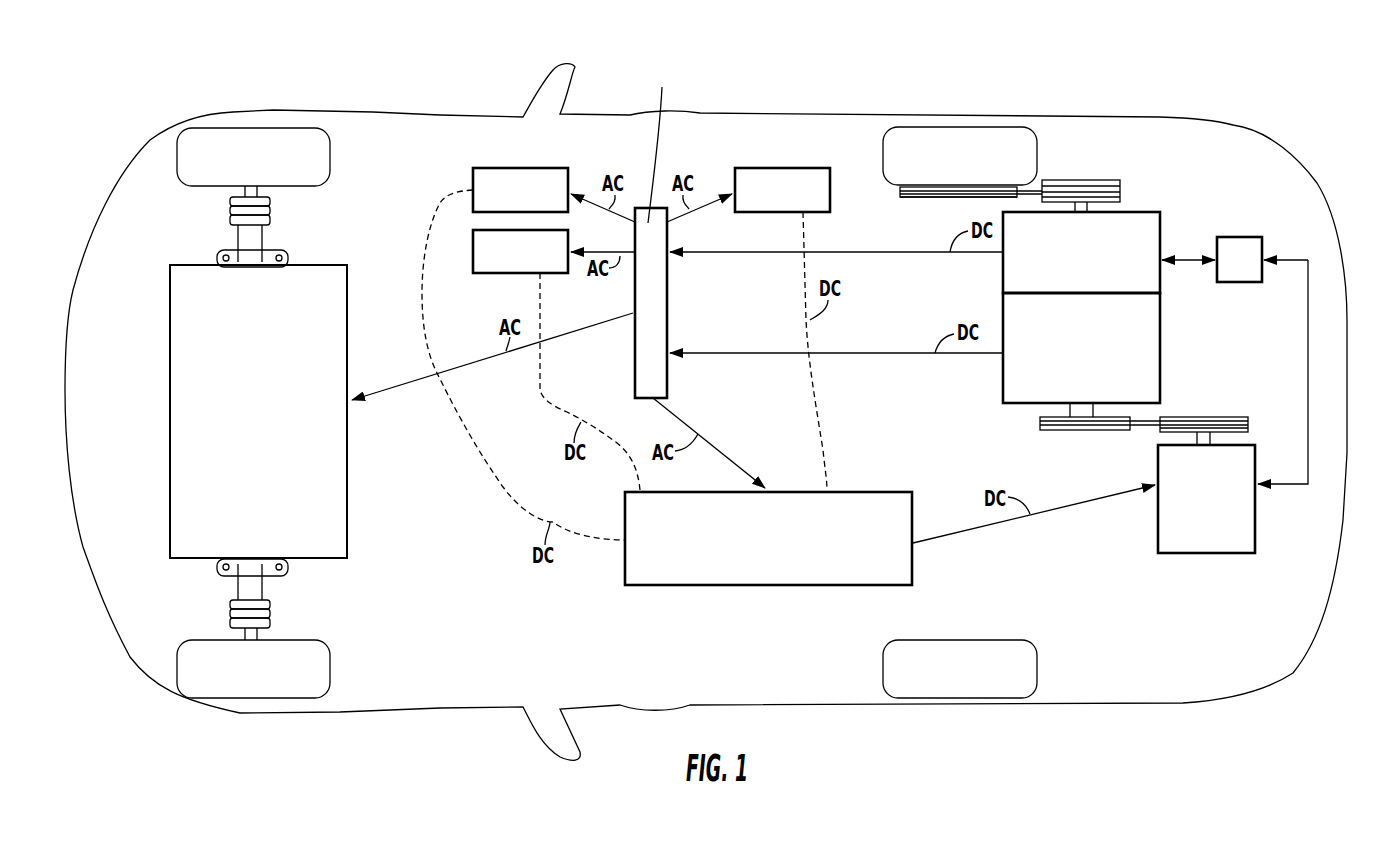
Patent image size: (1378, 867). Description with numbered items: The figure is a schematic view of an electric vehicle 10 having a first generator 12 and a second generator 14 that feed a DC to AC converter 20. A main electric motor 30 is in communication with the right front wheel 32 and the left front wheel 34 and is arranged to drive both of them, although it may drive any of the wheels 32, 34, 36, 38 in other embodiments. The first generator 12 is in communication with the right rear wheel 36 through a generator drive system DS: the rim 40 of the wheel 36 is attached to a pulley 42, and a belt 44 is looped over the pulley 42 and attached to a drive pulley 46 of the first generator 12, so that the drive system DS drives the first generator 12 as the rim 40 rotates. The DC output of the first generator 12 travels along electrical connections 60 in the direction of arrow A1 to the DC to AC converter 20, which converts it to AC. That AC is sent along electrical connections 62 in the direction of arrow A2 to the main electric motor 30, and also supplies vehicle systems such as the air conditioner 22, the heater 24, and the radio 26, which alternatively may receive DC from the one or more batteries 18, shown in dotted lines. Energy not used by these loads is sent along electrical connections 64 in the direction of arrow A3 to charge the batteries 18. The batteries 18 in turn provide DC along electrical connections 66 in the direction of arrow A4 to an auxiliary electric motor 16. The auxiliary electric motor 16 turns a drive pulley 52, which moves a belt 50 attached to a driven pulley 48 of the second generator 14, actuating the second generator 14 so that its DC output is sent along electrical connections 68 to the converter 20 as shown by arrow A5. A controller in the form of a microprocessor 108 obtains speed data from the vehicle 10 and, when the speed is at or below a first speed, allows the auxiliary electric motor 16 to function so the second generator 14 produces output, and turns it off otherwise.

The electric vehicle 10 is at (1259, 102).
The first generator 12 is at (1070, 284).
The second generator 14 is at (1070, 374).
The auxiliary electric motor 16 is at (1196, 547).
The one or more batteries 18 is at (756, 577).
The DC to AC converter 20 is at (639, 309).
The air conditioner 22 is at (509, 264).
The heater 24 is at (509, 202).
The radio 26 is at (771, 202).
The main electric motor 30 is at (249, 479).
The right front wheel 32 is at (267, 128).
The left front wheel 34 is at (262, 698).
The right rear wheel 36 is at (1002, 127).
The wheel 38 is at (970, 685).
The rim 40 is at (955, 186).
The pulley 42 is at (919, 198).
The belt 44 is at (1033, 187).
The drive pulley 46 is at (1105, 180).
The driven pulley 48 is at (1040, 418).
The belt 50 is at (1150, 418).
The drive pulley 52 is at (1248, 428).
The electrical connections 60 is at (903, 253).
The electrical connections 62 is at (497, 358).
The electrical connections 64 is at (697, 431).
The electrical connections 66 is at (1042, 514).
The electrical connections 68 is at (903, 354).
The microprocessor 108 is at (1224, 272).
The arrow A1 is at (671, 257).
The arrow A2 is at (353, 403).
The arrow A3 is at (768, 490).
The arrow A4 is at (1156, 489).
The arrow A5 is at (672, 357).
The generator drive system DS is at (1126, 183).